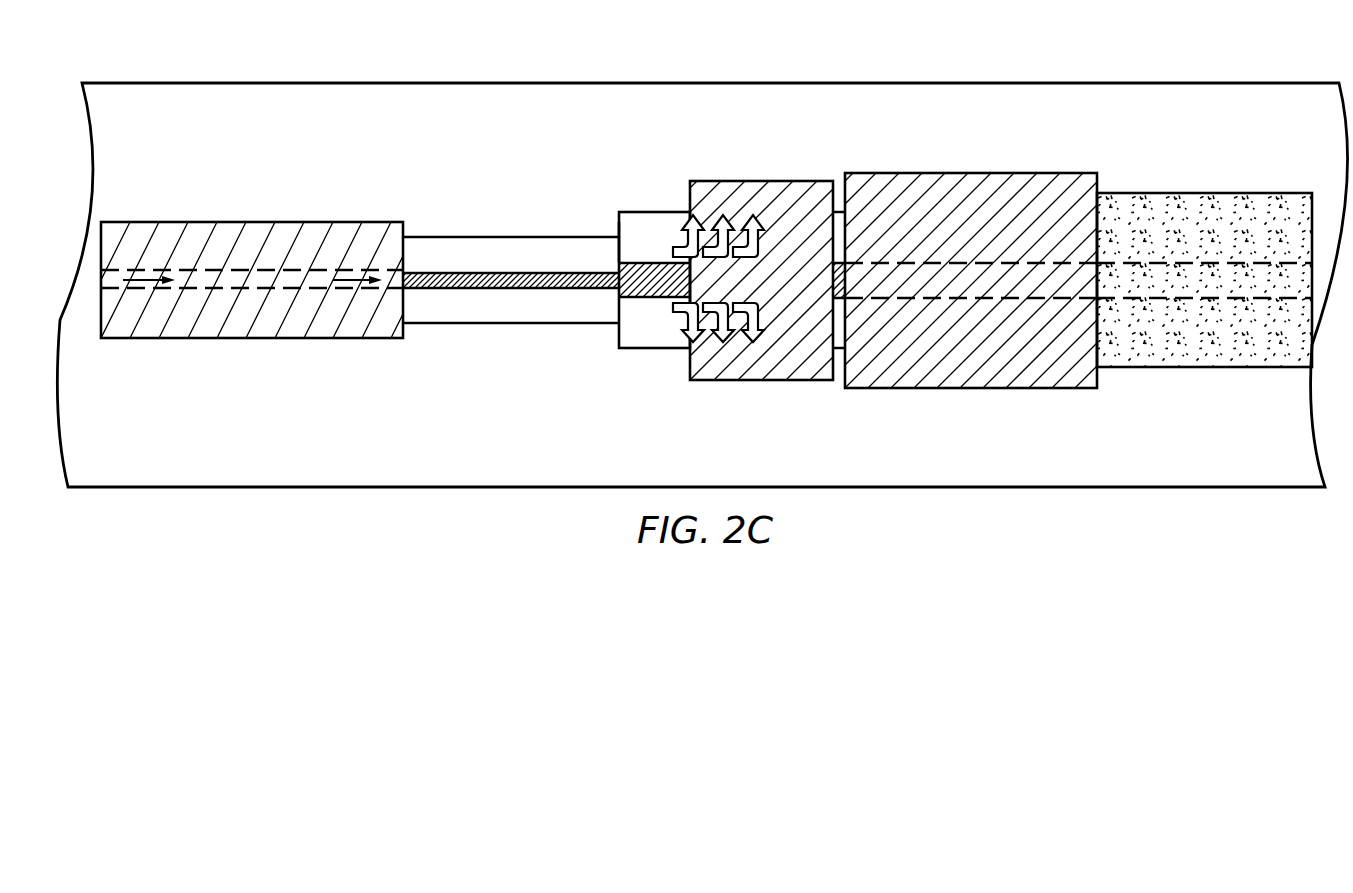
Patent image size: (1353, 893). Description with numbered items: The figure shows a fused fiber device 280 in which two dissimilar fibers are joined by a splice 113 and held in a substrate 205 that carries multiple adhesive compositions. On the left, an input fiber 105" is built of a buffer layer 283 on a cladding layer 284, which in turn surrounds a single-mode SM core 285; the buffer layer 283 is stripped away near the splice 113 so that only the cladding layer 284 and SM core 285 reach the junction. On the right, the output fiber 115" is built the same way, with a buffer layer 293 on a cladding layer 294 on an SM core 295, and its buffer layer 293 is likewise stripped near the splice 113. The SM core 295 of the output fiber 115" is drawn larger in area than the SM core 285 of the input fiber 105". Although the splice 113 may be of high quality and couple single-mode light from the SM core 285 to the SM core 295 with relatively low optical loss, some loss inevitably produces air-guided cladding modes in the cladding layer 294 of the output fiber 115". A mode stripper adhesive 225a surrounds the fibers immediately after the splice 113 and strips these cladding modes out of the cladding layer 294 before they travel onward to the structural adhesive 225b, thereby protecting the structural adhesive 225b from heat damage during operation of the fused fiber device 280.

The fused fiber device 280 is at (1138, 52).
The substrate 205 is at (712, 464).
The input fiber 105 is at (420, 366).
The buffer layer 283 is at (195, 230).
The cladding layer 284 is at (555, 237).
The SM core 285 is at (440, 273).
The splice 113 is at (618, 250).
The cladding layer 294 is at (618, 335).
The SM core 295 is at (657, 297).
The output fiber 115 is at (862, 411).
The mode stripper adhesive 225a is at (755, 195).
The structural adhesive 225b is at (960, 187).
The buffer layer 293 is at (1203, 202).